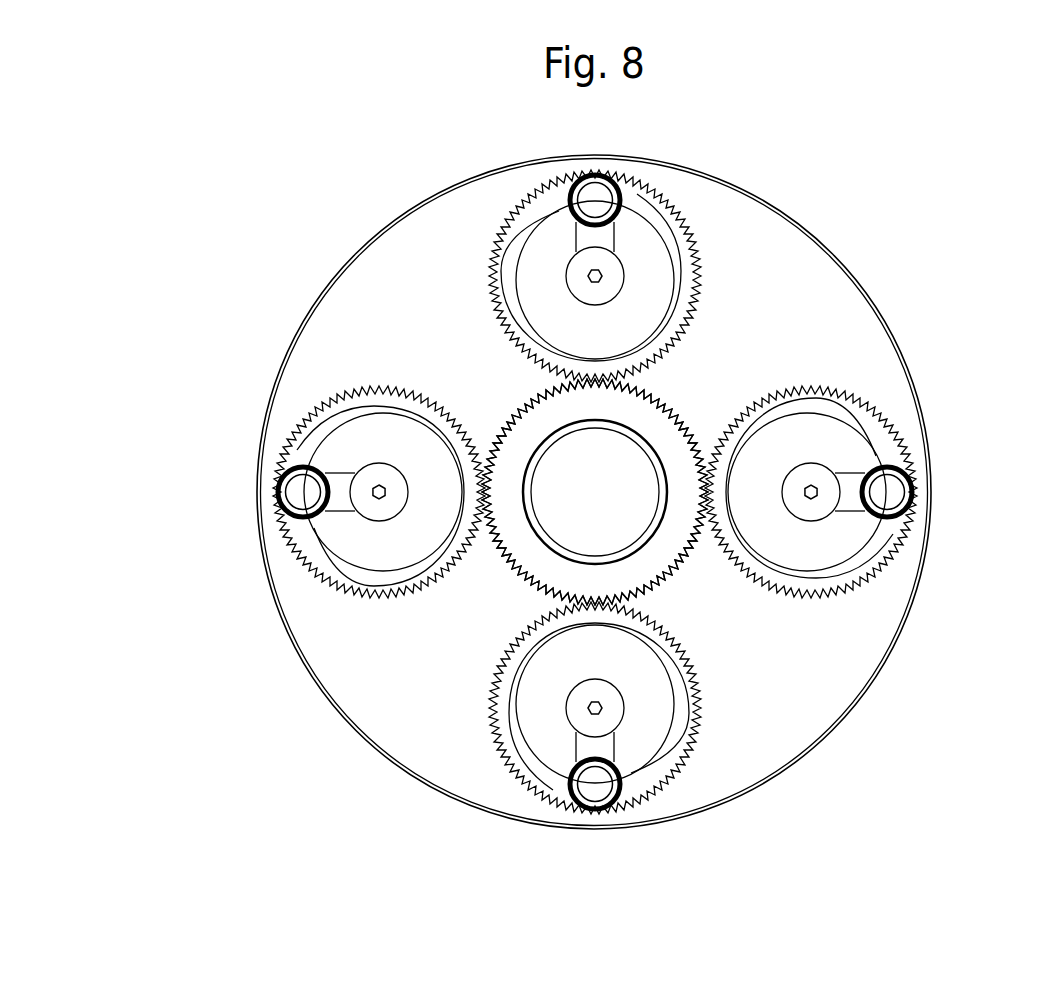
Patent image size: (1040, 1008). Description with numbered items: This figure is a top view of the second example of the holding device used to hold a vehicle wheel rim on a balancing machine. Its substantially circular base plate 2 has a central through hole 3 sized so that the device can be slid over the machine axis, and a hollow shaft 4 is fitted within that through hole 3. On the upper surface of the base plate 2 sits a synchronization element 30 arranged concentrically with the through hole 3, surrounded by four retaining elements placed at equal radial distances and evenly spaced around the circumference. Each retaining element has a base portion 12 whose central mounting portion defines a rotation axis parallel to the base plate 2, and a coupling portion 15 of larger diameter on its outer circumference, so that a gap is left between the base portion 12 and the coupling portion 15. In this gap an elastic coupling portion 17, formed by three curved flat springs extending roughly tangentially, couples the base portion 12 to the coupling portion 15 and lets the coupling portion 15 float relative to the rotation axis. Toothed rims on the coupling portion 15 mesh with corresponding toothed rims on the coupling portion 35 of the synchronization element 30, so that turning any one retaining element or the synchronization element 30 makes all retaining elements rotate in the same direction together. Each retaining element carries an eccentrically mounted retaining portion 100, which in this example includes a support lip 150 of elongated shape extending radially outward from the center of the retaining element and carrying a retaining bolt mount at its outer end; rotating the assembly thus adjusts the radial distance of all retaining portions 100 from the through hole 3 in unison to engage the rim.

The base plate 2 is at (355, 685).
The through hole 3 is at (596, 492).
The hollow shaft 4 is at (638, 543).
The base portion 12 is at (556, 250).
The coupling portion 15 is at (660, 198).
The elastic coupling portion 17 is at (677, 243).
The synchronization element 30 is at (658, 425).
The coupling portion of the synchronization element 35 is at (688, 425).
The retaining portion 100 is at (597, 200).
The support lip 150 is at (607, 238).